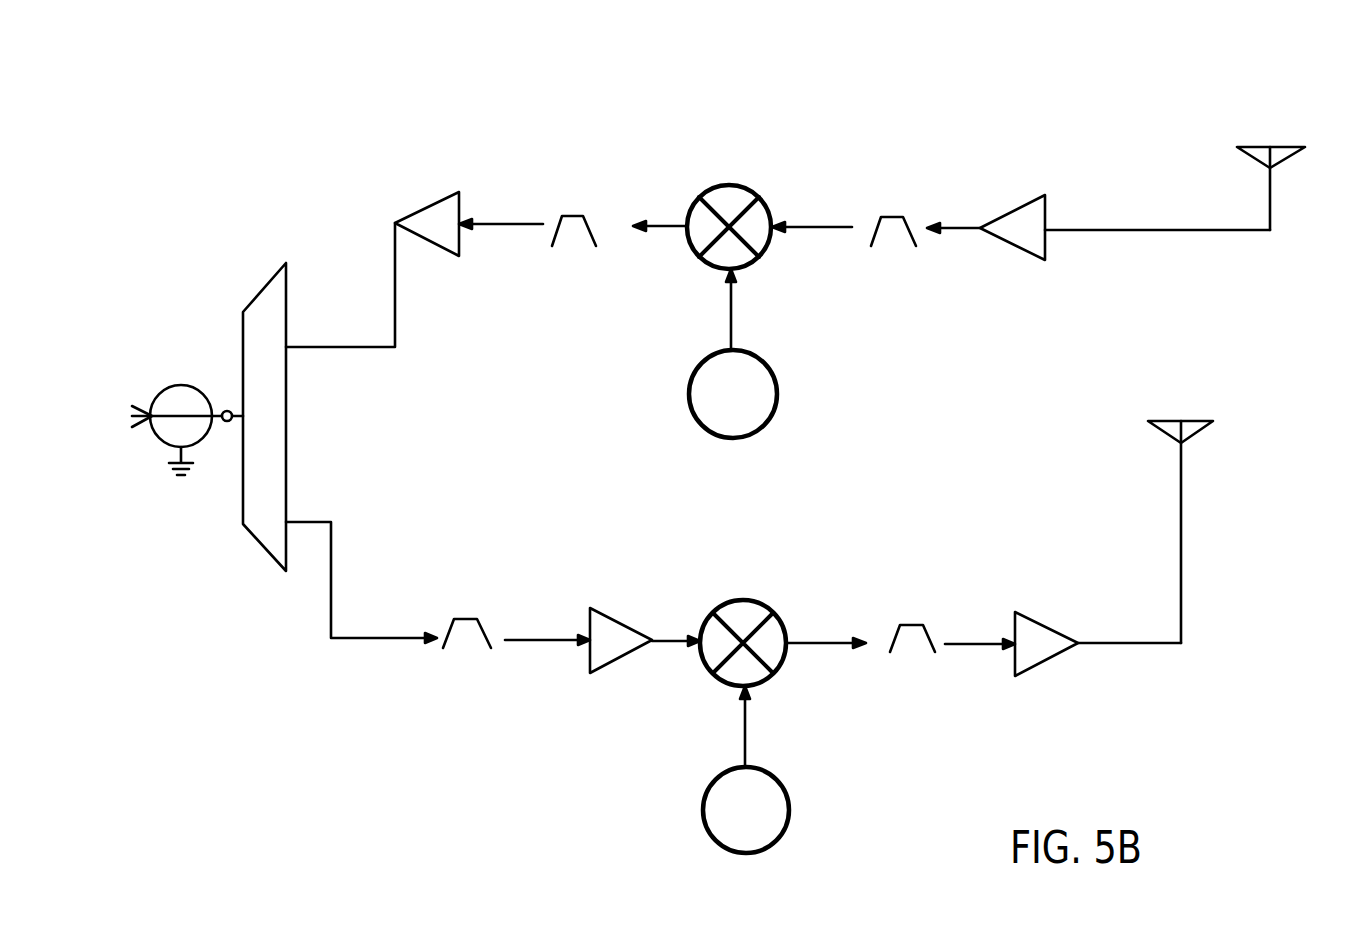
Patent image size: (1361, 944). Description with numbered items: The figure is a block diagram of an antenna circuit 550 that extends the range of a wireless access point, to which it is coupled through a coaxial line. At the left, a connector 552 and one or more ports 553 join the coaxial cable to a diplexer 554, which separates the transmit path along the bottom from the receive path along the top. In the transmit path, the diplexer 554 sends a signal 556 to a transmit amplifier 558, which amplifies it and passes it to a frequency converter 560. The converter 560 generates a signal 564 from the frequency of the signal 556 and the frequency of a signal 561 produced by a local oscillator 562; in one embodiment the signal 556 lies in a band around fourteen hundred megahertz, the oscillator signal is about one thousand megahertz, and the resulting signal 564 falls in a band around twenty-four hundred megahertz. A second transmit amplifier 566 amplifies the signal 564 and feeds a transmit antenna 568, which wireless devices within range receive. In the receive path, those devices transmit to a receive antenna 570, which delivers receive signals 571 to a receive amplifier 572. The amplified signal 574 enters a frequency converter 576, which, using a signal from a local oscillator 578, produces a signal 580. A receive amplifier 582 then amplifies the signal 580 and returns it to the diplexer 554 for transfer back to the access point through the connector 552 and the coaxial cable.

The antenna circuit 550 is at (895, 86).
The connector 552 is at (162, 385).
The port 553 is at (227, 410).
The diplexer 554 is at (284, 391).
The signal 556 is at (460, 651).
The transmit amplifier 558 is at (633, 654).
The frequency converter 560 is at (750, 600).
The signal 561 is at (745, 718).
The local oscillator 562 is at (789, 803).
The signal 564 is at (907, 656).
The transmit amplifier 566 is at (1056, 658).
The transmit antenna 568 is at (1193, 421).
The receive antenna 570 is at (1282, 147).
The receive signal 571 is at (1150, 230).
The receive amplifier 572 is at (1036, 241).
The signal 574 is at (888, 250).
The frequency converter 576 is at (754, 186).
The local oscillator 578 is at (770, 362).
The signal 580 is at (570, 249).
The receive amplifier 582 is at (453, 236).